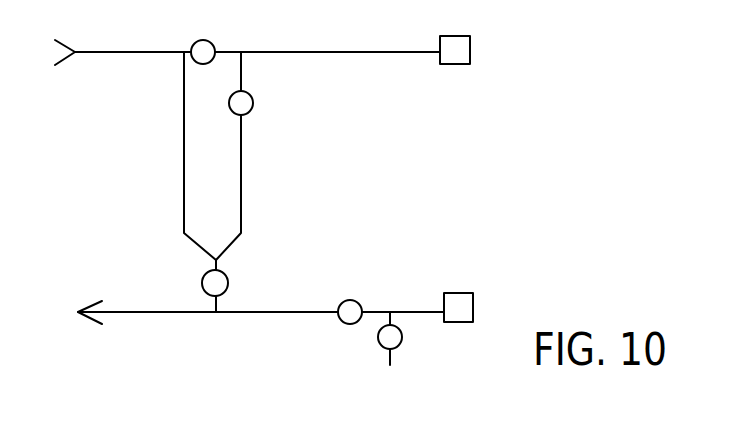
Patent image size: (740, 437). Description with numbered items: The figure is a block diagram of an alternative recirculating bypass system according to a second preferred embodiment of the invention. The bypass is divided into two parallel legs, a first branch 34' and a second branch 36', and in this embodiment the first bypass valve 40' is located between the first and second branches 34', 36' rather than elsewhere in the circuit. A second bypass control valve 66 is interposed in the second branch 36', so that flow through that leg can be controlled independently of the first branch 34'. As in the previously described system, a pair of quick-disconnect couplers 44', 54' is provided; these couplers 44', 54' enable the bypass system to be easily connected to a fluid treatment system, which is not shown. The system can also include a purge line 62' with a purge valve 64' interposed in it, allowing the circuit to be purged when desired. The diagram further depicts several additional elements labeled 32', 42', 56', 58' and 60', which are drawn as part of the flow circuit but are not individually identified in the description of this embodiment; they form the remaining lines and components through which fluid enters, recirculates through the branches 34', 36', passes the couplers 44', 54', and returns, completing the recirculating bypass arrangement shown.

The inlet line 32' is at (123, 37).
The first branch 34' is at (165, 156).
The second branch 36' is at (259, 156).
The first bypass valve 40' is at (231, 36).
The line to pump 42' is at (327, 30).
The quick-disconnect coupler 44' is at (488, 35).
The quick-disconnect coupler 54' is at (486, 286).
The valve 56' is at (325, 323).
The outlet line 58' is at (261, 325).
The valve 60' is at (246, 278).
The purge line 62' is at (358, 339).
The purge valve 64' is at (422, 345).
The second bypass control valve 66 is at (253, 103).